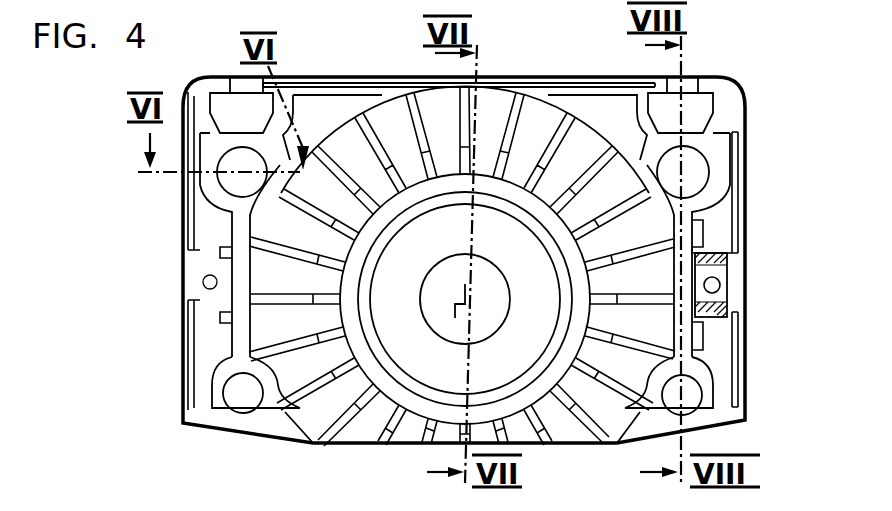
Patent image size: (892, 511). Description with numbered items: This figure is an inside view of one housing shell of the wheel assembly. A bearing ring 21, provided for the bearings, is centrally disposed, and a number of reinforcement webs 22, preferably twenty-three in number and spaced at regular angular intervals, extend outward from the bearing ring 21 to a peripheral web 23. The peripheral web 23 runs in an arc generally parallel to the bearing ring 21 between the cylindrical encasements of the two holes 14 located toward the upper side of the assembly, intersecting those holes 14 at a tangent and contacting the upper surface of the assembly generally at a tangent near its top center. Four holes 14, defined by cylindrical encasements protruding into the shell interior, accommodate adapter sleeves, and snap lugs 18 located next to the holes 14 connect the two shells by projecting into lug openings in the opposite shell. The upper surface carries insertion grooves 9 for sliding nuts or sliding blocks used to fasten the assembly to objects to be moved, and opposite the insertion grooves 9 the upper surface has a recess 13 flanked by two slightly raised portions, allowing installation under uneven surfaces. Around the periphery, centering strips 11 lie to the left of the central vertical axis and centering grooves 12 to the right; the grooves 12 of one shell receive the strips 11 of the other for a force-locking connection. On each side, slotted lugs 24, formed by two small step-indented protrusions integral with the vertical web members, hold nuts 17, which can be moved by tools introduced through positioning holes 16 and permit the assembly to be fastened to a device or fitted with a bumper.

The insertion grooves 9 is at (705, 100).
The centering strips 11 is at (188, 222).
The centering grooves 12 is at (607, 87).
The recess 13 is at (323, 83).
The holes 14 is at (683, 167).
The positioning holes 16 is at (718, 287).
The nuts 17 is at (718, 263).
The snap lugs 18 is at (723, 160).
The bearing ring 21 is at (385, 388).
The reinforcement webs 22 is at (325, 433).
The peripheral web 23 is at (348, 110).
The slotted lugs 24 is at (693, 257).